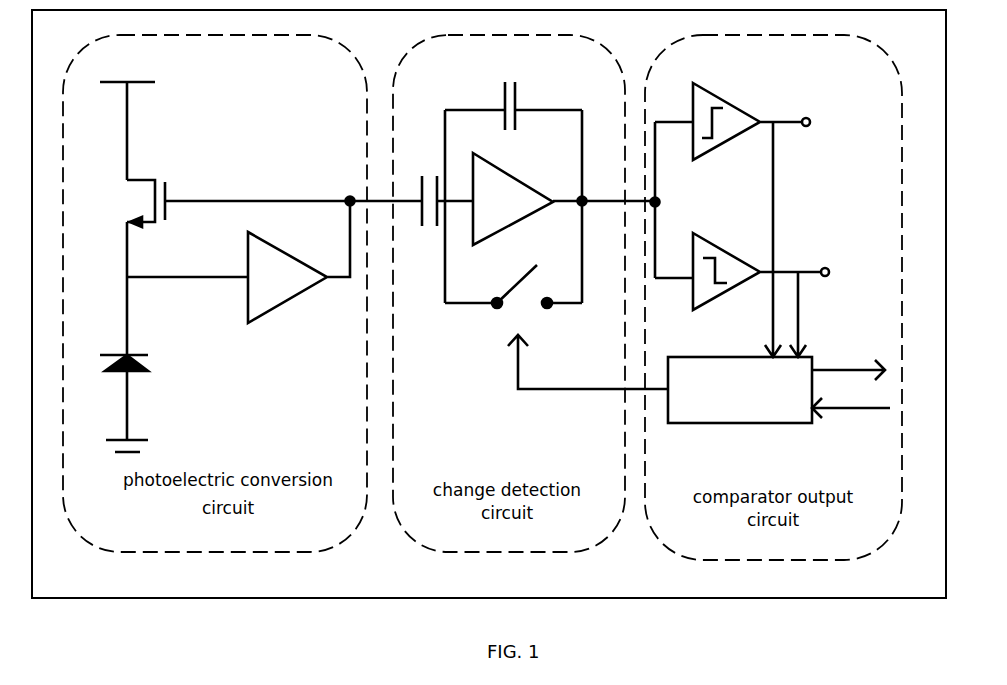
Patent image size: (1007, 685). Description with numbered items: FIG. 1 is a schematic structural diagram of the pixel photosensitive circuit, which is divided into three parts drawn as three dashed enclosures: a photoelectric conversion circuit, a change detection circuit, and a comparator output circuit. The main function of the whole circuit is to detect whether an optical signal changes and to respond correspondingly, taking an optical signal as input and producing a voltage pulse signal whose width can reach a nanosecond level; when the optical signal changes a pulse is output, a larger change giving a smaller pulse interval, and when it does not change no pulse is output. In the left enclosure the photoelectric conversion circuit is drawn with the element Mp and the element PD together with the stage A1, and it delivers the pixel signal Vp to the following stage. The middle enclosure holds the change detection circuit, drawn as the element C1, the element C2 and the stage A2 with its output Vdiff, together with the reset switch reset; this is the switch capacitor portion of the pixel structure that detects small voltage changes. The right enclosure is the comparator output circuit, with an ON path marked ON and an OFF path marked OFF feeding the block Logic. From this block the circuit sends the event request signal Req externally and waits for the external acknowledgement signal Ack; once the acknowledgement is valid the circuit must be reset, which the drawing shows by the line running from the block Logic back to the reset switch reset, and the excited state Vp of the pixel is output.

The PMOS transistor Mp is at (221, 261).
The photodiode PD is at (145, 398).
The excited state of the pixel Vp is at (324, 186).
The inverting amplifier A1 is at (238, 262).
The capacitor C1 is at (411, 180).
The capacitor C2 is at (512, 192).
The inverting amplifier A2 is at (564, 199).
The difference voltage output Vdiff is at (584, 174).
The element reset is at (543, 327).
The ON event comparator ON is at (745, 220).
The OFF event comparator OFF is at (745, 295).
The logic block Logic is at (740, 390).
The event request signal Req is at (848, 356).
The external acknowledgement signal Ack is at (851, 401).